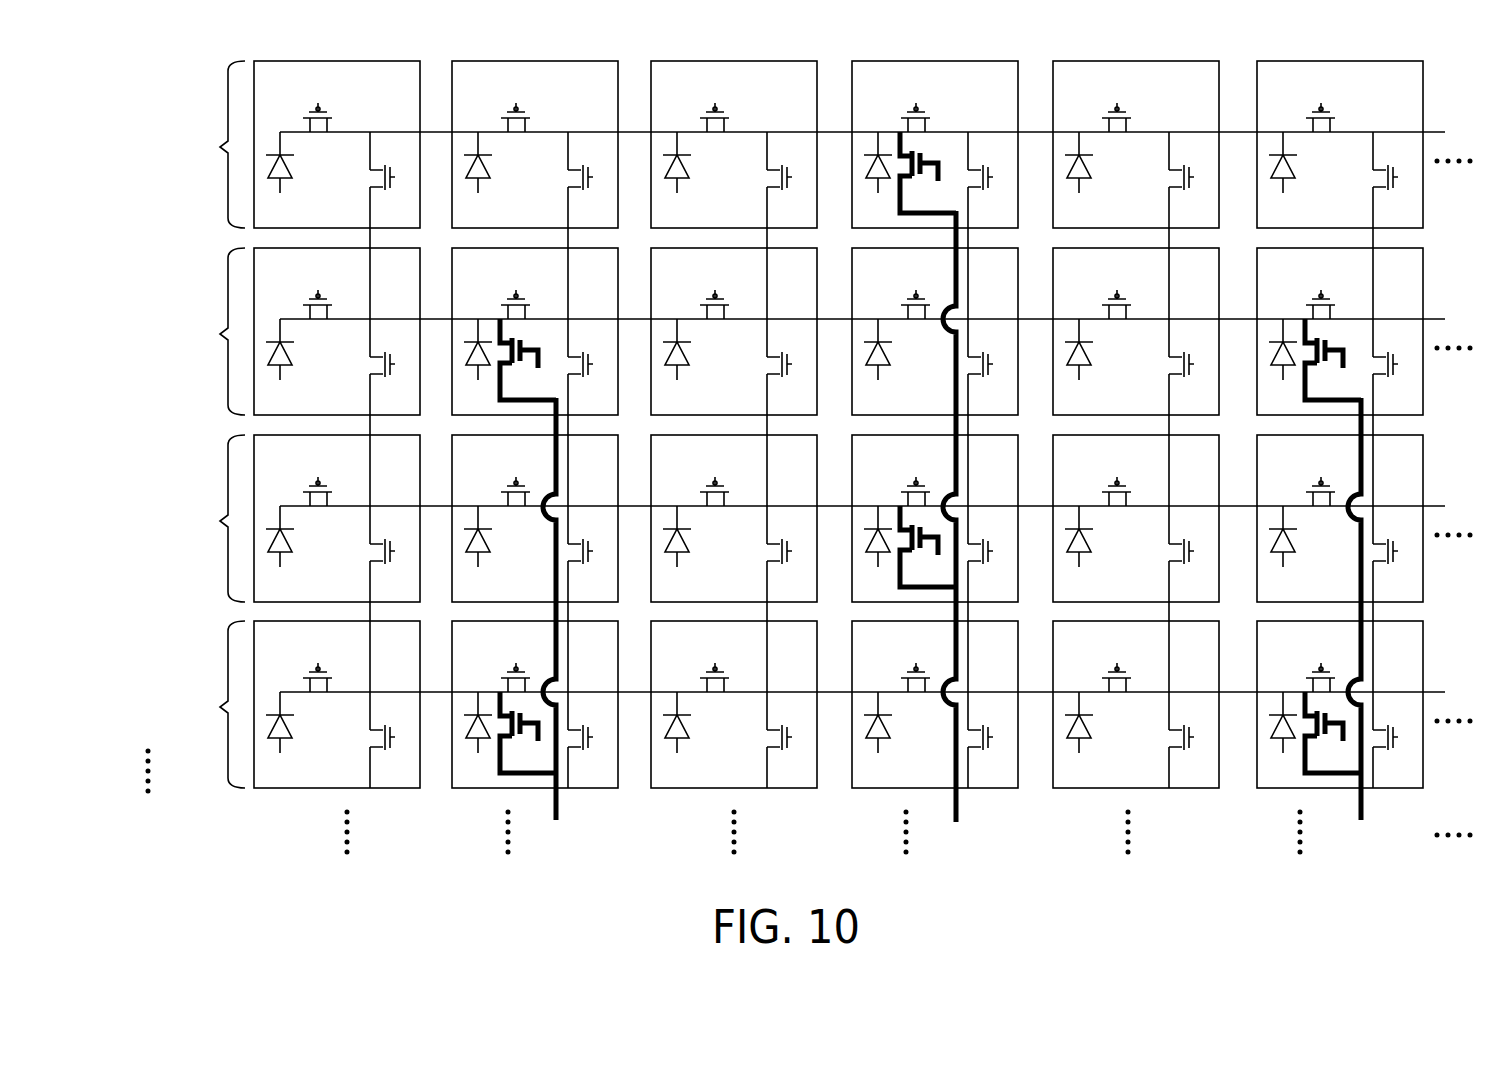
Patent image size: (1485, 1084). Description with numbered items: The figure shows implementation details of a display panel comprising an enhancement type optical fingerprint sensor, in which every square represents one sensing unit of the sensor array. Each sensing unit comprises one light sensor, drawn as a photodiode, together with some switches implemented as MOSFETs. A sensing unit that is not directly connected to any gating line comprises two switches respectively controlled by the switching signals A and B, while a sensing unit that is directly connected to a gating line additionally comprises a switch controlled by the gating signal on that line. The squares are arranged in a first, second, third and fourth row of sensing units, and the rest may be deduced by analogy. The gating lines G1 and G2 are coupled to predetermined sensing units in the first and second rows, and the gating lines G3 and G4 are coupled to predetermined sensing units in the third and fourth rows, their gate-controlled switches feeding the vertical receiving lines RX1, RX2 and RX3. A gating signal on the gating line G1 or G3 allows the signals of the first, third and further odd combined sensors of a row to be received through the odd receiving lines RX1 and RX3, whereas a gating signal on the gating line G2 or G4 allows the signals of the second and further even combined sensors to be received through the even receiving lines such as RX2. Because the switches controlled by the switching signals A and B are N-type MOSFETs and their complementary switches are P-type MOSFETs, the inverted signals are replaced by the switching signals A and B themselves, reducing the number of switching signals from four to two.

The switching signal A is at (895, 463).
The switching signal B is at (819, 382).
The gating line G1 is at (932, 360).
The gating line G2 is at (929, 173).
The gating line G3 is at (932, 733).
The gating line G4 is at (929, 547).
The receiving line RX1 is at (555, 627).
The receiving line RX2 is at (956, 535).
The receiving line RX3 is at (1361, 627).